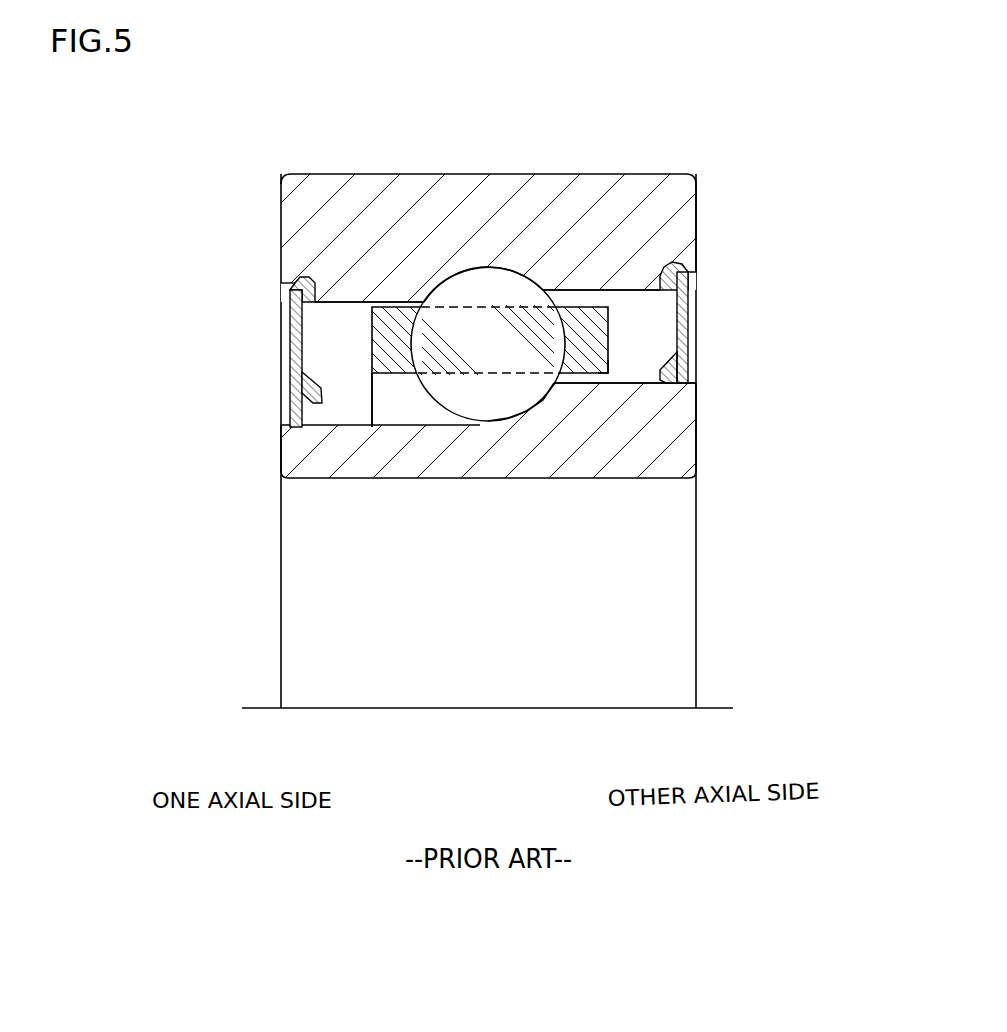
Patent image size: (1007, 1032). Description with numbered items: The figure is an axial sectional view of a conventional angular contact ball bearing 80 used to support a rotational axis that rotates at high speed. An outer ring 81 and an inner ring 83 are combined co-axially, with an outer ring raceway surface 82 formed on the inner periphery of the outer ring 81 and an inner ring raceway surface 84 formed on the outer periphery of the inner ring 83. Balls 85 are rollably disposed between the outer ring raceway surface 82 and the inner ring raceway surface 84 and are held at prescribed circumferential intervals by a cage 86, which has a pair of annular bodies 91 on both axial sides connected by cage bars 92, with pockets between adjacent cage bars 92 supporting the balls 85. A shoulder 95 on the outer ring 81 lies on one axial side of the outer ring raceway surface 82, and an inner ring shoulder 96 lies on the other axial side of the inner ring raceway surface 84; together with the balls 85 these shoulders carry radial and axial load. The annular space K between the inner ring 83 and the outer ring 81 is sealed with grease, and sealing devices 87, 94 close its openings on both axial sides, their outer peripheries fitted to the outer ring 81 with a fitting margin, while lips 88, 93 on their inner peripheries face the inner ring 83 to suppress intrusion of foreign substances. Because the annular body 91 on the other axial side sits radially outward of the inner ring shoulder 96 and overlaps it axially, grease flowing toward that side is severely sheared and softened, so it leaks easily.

The angular contact ball bearing 80 is at (719, 152).
The outer ring 81 is at (317, 174).
The outer ring raceway surface 82 is at (512, 280).
The inner ring 83 is at (588, 478).
The inner ring raceway surface 84 is at (540, 400).
The ball 85 is at (465, 276).
The cage 86 is at (398, 313).
The sealing device 87 is at (287, 352).
The lip 88 is at (288, 422).
The annular body 91 is at (388, 375).
The cage bar 92 is at (468, 372).
The lip 93 is at (688, 377).
The sealing device 94 is at (688, 303).
The shoulder 95 is at (287, 324).
The inner ring shoulder 96 is at (627, 390).
The annular space K is at (607, 295).